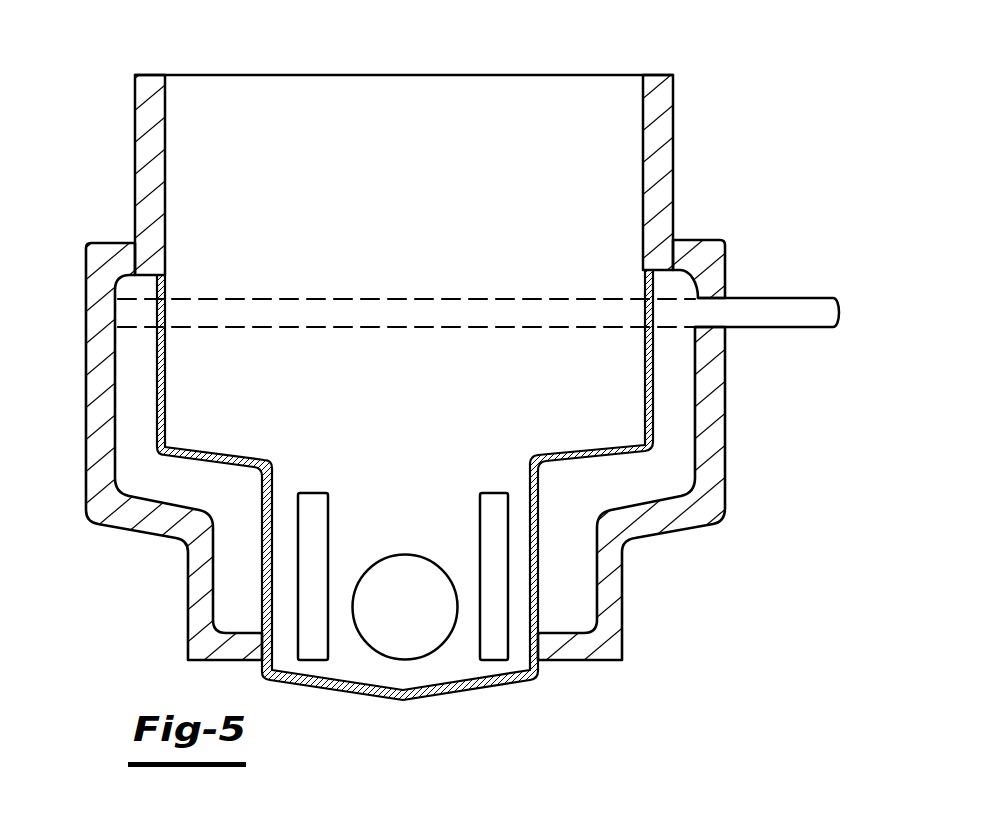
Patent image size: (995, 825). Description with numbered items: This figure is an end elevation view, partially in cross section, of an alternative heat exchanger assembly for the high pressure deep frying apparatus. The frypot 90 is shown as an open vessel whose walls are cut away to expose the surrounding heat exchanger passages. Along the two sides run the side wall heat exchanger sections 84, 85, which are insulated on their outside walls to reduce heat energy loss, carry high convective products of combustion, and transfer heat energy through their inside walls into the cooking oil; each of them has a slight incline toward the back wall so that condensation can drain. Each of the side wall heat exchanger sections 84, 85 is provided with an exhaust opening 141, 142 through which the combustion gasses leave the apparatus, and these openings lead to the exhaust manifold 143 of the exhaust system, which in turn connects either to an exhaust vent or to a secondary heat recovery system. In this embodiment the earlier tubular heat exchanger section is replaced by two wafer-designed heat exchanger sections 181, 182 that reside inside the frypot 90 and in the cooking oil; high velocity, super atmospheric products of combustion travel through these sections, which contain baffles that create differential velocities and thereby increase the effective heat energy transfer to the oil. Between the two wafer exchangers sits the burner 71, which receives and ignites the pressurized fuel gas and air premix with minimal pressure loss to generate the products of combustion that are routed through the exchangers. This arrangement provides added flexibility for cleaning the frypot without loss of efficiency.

The frypot 90 is at (653, 75).
The side wall heat exchanger section 84 is at (138, 382).
The side wall heat exchanger section 85 is at (680, 435).
The exhaust opening 141 is at (132, 305).
The exhaust opening 142 is at (687, 313).
The exhaust manifold 143 is at (797, 320).
The heat exchanger section 181 is at (308, 587).
The heat exchanger section 182 is at (495, 597).
The burner 71 is at (410, 572).